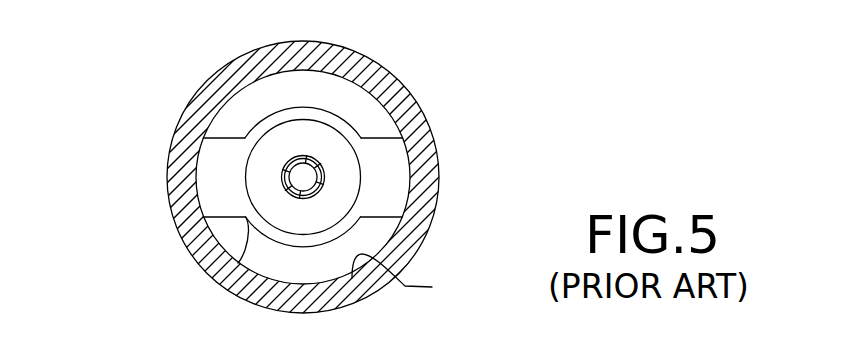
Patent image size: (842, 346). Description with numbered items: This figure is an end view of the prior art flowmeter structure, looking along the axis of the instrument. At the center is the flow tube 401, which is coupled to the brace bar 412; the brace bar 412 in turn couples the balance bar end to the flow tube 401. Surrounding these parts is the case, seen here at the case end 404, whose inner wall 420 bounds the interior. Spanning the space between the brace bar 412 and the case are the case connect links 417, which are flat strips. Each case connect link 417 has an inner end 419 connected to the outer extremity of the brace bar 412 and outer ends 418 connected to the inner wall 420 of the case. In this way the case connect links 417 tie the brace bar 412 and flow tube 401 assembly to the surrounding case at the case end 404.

The case end 404 is at (398, 80).
The case connect links 417 is at (226, 157).
The inner end 419 is at (362, 197).
The brace bar 412 is at (277, 205).
The flow tube 401 is at (292, 178).
The outer ends 418 is at (210, 202).
The inner wall 420 is at (418, 280).